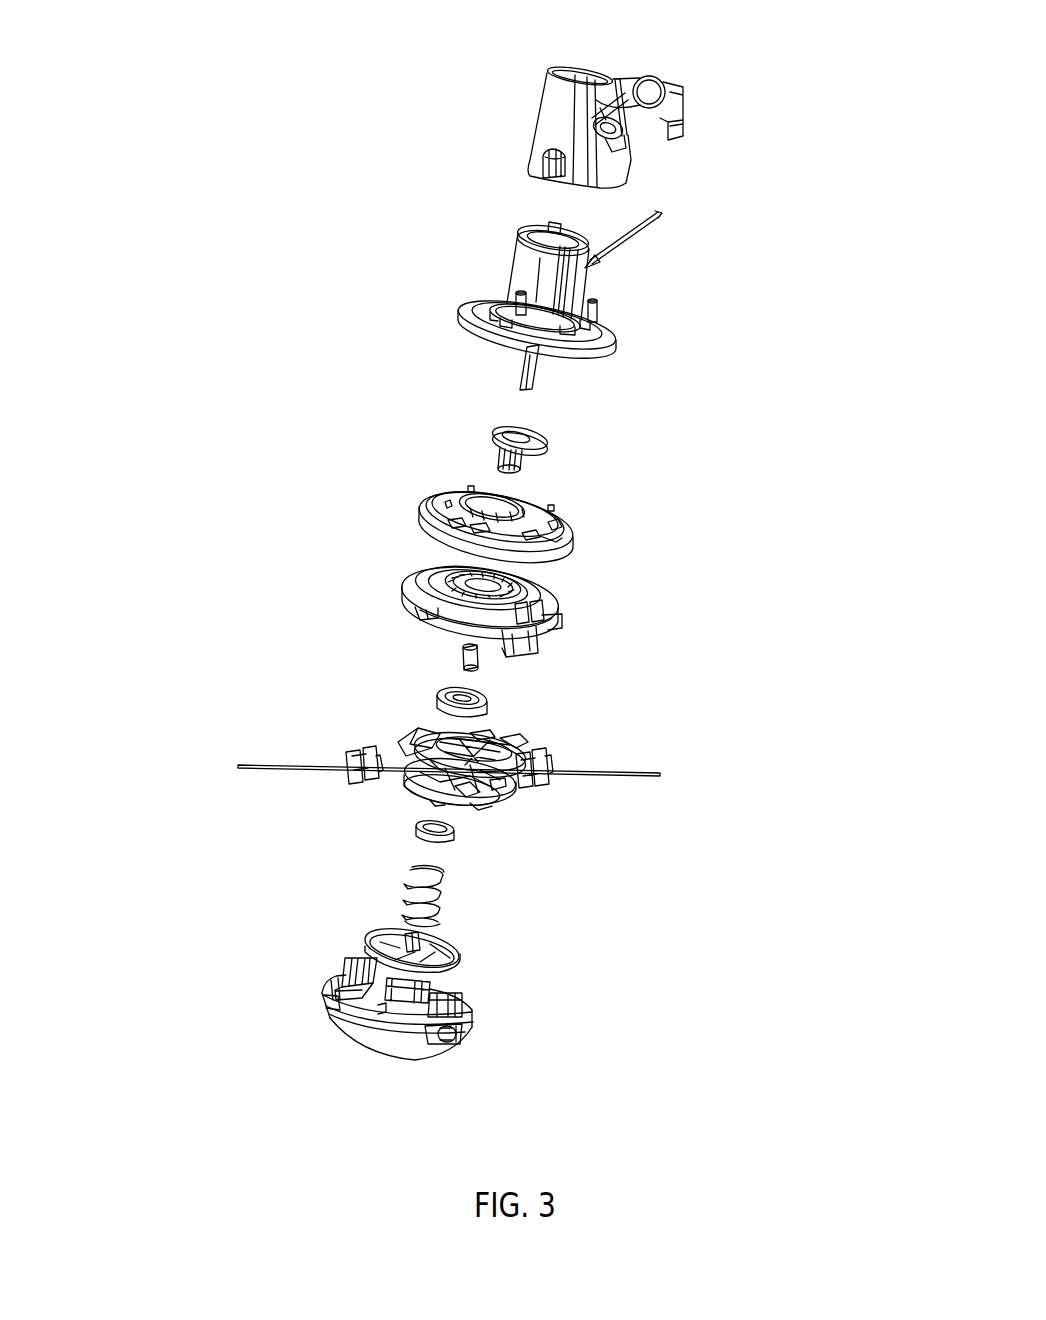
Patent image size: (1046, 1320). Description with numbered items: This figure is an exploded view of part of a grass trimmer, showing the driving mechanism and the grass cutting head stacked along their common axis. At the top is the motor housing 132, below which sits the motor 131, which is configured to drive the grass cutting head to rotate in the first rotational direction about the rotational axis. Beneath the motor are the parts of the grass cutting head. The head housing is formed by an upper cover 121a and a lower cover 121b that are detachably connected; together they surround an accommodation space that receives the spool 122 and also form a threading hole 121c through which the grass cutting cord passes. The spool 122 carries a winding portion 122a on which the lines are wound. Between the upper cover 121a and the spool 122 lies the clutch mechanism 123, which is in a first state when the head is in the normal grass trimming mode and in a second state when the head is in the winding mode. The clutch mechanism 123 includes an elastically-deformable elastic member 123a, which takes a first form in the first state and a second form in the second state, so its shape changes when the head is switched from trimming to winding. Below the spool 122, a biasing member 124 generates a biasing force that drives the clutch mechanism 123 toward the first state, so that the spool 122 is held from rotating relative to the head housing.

The motor housing 132 is at (541, 120).
The motor 131 is at (515, 270).
The upper cover 121a is at (542, 617).
The clutch mechanism 123 is at (412, 727).
The elastic member 123a is at (405, 735).
The spool 122 is at (493, 792).
The winding portion 122a is at (470, 793).
The threading hole 121c is at (353, 770).
The biasing member 124 is at (403, 892).
The lower cover 121b is at (467, 1032).